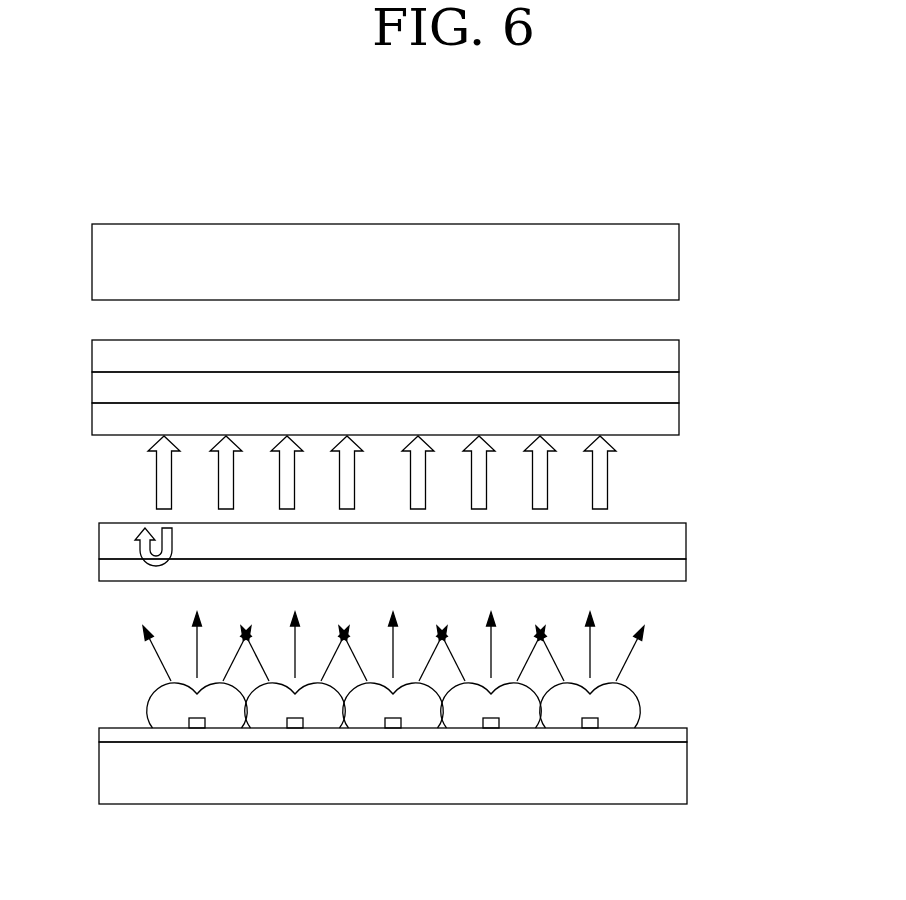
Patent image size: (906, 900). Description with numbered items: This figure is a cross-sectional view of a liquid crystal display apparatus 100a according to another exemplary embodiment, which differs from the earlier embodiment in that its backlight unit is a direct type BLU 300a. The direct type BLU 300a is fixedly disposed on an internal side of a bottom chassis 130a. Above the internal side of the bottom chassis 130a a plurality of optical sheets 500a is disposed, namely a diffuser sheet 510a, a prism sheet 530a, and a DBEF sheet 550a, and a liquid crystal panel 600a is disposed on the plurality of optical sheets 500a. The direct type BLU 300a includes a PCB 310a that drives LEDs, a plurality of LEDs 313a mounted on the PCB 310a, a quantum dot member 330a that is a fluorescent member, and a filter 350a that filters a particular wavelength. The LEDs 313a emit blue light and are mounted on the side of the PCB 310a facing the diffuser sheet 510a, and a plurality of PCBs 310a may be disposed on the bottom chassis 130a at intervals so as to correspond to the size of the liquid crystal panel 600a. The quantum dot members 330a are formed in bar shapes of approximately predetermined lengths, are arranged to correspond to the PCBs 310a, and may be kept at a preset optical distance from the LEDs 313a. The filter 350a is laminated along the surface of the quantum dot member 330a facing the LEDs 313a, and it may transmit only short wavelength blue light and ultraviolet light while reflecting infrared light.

The liquid crystal display apparatus 100a is at (485, 158).
The liquid crystal panel 600a is at (680, 263).
The plurality of optical sheets 500a is at (457, 387).
The diffuser sheet 510a is at (680, 355).
The prism sheet 530a is at (680, 386).
The DBEF sheet 550a is at (680, 421).
The direct type BLU 300a is at (439, 687).
The quantum dot member 330a is at (687, 541).
The filter 350a is at (687, 572).
The LEDs 313a is at (191, 720).
The PCB 310a is at (123, 736).
The bottom chassis 130a is at (186, 795).